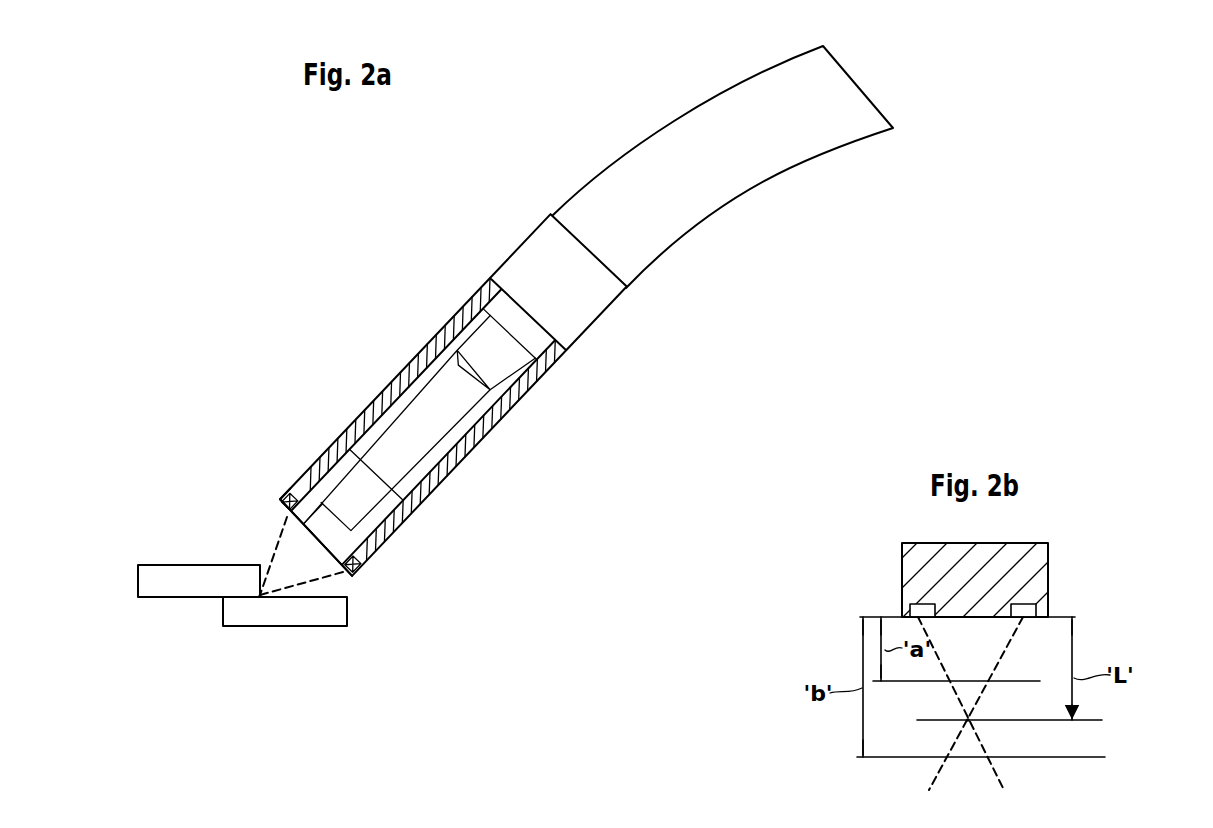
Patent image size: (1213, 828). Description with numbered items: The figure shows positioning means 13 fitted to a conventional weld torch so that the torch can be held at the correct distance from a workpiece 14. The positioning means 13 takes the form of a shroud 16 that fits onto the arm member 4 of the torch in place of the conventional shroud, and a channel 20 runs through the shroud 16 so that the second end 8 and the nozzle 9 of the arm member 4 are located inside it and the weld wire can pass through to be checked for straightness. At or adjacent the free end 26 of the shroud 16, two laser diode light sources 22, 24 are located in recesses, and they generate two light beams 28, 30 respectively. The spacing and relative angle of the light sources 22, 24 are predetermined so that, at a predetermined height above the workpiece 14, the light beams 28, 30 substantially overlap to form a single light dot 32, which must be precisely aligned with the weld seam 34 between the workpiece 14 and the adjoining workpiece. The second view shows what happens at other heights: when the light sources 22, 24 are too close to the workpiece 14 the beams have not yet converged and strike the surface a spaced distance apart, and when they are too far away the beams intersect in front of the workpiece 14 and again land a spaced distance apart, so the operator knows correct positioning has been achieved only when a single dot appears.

In FIG. 2A, the arm member 4 is at (706, 130).
In FIG. 2A, the second end 8 is at (306, 540).
In FIG. 2A, the nozzle 9 is at (318, 498).
In FIG. 2A, the positioning means 13 is at (405, 403).
In FIG. 2A, the workpiece 14 is at (152, 584).
In FIG. 2B, the workpiece 14 is at (1114, 720).
In FIG. 2A, the shroud 16 is at (452, 318).
In FIG. 2B, the shroud 16 is at (1033, 572).
In FIG. 2A, the channel 20 is at (340, 505).
In FIG. 2A, the laser diode light source 22 is at (296, 500).
In FIG. 2B, the laser diode light source 22 is at (915, 603).
In FIG. 2A, the laser diode light source 24 is at (357, 570).
In FIG. 2B, the laser diode light source 24 is at (1043, 608).
In FIG. 2A, the free end 26 is at (271, 507).
In FIG. 2A, the light beam 28 is at (273, 555).
In FIG. 2B, the light beam 28 is at (940, 643).
In FIG. 2A, the light beam 30 is at (327, 598).
In FIG. 2B, the light beam 30 is at (1017, 645).
In FIG. 2A, the single light dot 32 is at (252, 588).
In FIG. 2B, the single light dot 32 is at (970, 721).
In FIG. 2A, the weld seam 34 is at (259, 600).